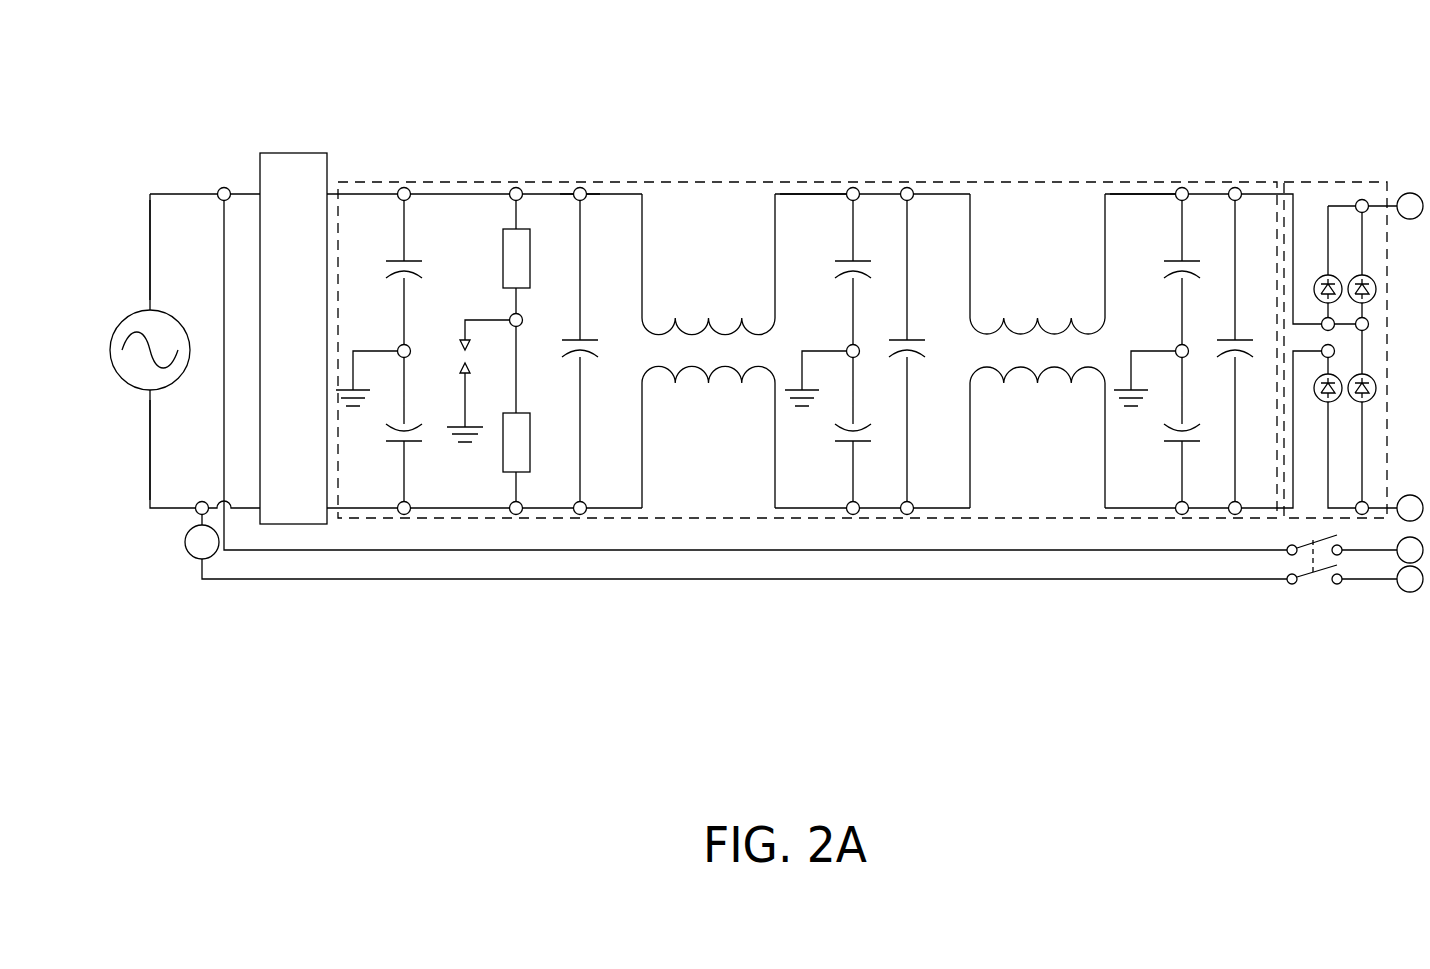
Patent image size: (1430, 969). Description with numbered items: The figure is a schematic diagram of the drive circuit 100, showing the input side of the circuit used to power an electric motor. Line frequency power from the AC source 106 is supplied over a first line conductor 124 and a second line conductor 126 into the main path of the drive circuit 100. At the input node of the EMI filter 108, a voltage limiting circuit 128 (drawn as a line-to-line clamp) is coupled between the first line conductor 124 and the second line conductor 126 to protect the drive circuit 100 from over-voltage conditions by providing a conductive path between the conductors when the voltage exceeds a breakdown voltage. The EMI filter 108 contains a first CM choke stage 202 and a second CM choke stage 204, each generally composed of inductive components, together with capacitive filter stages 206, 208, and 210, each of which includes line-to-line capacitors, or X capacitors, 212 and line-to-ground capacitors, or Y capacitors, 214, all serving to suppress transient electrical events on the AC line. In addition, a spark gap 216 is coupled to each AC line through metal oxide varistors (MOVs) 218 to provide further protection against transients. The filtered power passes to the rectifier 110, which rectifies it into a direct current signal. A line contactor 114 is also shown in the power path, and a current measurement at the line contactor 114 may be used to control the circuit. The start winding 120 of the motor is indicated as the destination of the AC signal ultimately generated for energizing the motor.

The drive circuit 100 is at (232, 122).
The AC source 106 is at (127, 322).
The electromagnetic interference (EMI) filter 108 is at (362, 182).
The rectifier 110 is at (1340, 182).
The line contactor 114 is at (1298, 583).
The start winding 120 is at (185, 543).
The first line conductor 124 is at (150, 228).
The second line conductor 126 is at (150, 441).
The voltage limiting circuit 128 is at (300, 152).
The first CM choke stage 202 is at (765, 328).
The second CM choke stage 204 is at (1087, 330).
The capacitive filter stage 206 is at (562, 193).
The capacitive filter stage 208 is at (797, 193).
The capacitive filter stage 210 is at (1128, 182).
The line-to-line capacitors (X capacitors) 212 is at (592, 338).
The line-to-ground capacitors (Y capacitors) 214 is at (388, 258).
The spark gap 216 is at (455, 340).
The metal oxide varistors (MOVs) 218 is at (533, 229).